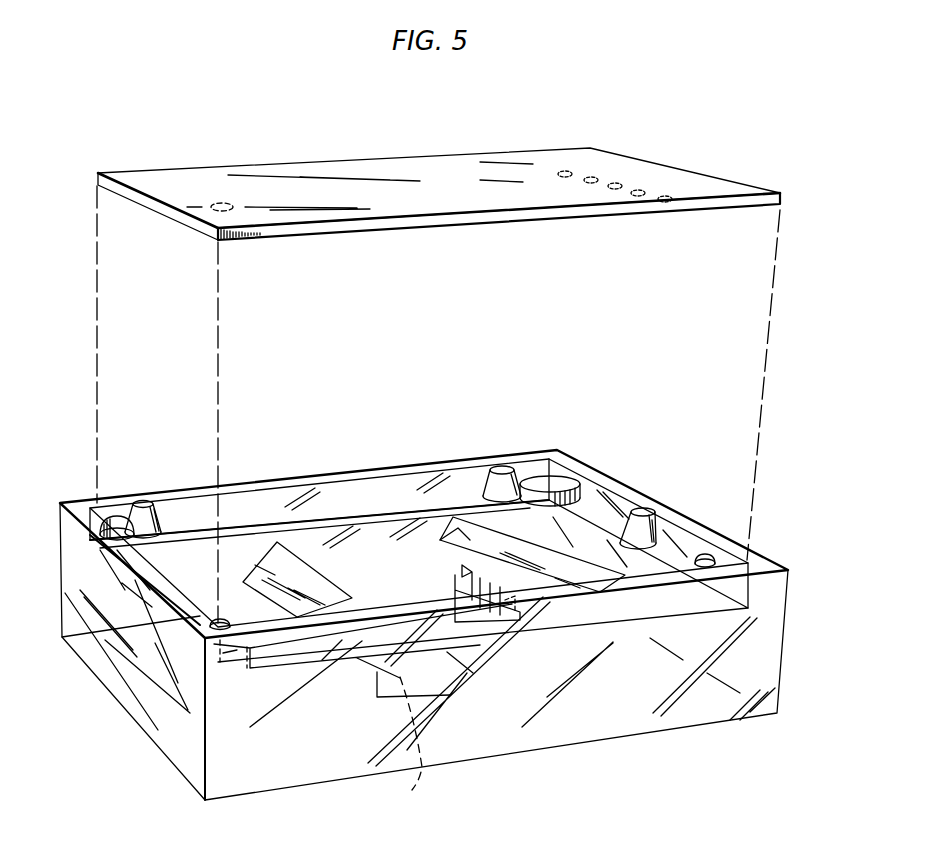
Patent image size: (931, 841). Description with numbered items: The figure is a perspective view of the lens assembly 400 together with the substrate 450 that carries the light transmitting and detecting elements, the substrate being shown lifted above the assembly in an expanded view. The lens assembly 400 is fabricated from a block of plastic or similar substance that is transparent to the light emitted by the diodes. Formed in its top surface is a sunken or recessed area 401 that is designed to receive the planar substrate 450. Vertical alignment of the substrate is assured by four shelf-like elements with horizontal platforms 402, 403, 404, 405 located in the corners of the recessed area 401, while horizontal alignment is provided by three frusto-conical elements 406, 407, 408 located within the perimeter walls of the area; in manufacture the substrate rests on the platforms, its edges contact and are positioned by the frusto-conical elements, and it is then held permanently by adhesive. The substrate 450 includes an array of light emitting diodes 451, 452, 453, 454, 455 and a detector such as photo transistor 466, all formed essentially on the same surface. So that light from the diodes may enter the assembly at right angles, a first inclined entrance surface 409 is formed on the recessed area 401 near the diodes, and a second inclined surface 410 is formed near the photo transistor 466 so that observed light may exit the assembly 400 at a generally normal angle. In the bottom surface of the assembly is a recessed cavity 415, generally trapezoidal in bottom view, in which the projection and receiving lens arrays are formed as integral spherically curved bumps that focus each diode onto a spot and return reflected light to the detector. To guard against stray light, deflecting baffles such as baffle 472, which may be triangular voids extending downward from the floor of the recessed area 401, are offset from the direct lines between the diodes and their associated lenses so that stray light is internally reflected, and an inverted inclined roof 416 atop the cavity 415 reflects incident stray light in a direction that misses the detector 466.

The lens assembly 400 is at (788, 630).
The recessed area 401 is at (386, 586).
The horizontal platform 402 is at (113, 520).
The horizontal platform 403 is at (227, 622).
The horizontal platform 404 is at (547, 477).
The horizontal platform 405 is at (709, 556).
The frusto-conical element 406 is at (143, 501).
The frusto-conical element 407 is at (505, 466).
The frusto-conical element 408 is at (644, 509).
The first inclined entrance surface 409 is at (457, 548).
The second inclined surface 410 is at (282, 575).
The recessed cavity 415 is at (473, 687).
The inverted inclined roof 416 is at (414, 742).
The substrate 450 is at (311, 145).
The light emitting diode 451 is at (670, 196).
The light emitting diode 452 is at (642, 190).
The light emitting diode 453 is at (618, 183).
The light emitting diode 454 is at (593, 176).
The light emitting diode 455 is at (566, 169).
The photo transistor 466 is at (213, 213).
The deflecting baffle 472 is at (457, 579).